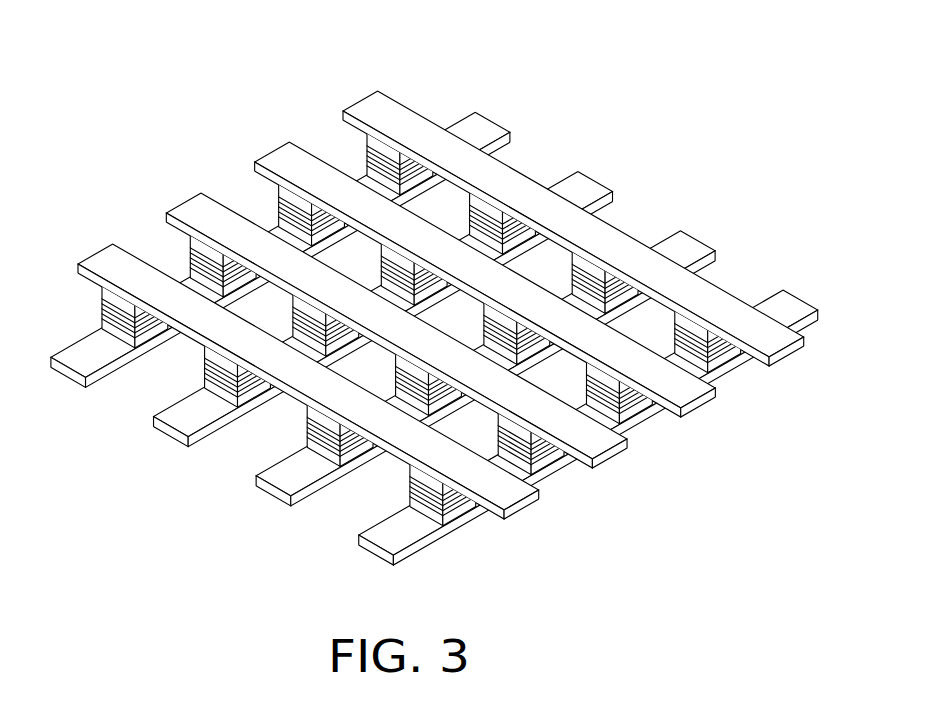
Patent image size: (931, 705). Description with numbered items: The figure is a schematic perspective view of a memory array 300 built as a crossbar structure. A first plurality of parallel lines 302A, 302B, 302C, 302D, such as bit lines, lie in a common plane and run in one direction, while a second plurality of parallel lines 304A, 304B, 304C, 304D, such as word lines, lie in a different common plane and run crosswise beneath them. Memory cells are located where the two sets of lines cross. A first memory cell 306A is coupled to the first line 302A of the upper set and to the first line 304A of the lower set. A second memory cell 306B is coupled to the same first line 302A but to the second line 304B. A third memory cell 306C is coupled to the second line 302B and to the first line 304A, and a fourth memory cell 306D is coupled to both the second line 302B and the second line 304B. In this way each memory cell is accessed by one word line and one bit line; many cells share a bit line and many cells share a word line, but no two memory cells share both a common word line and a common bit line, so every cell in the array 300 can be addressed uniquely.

The memory array 300 is at (415, 304).
The first line of the first plurality of parallel lines 302A is at (102, 260).
The second line of the first plurality of parallel lines 302B is at (192, 202).
The line of the first plurality of parallel lines 302C is at (281, 158).
The line of the first plurality of parallel lines 302D is at (362, 107).
The first line of the second plurality of parallel lines 304A is at (64, 375).
The second line of the second plurality of parallel lines 304B is at (164, 430).
The line of the second plurality of parallel lines 304C is at (268, 488).
The line of the second plurality of parallel lines 304D is at (362, 545).
The first memory cell 306A is at (116, 306).
The second memory cell 306B is at (224, 370).
The third memory cell 306C is at (188, 258).
The fourth memory cell 306D is at (312, 311).